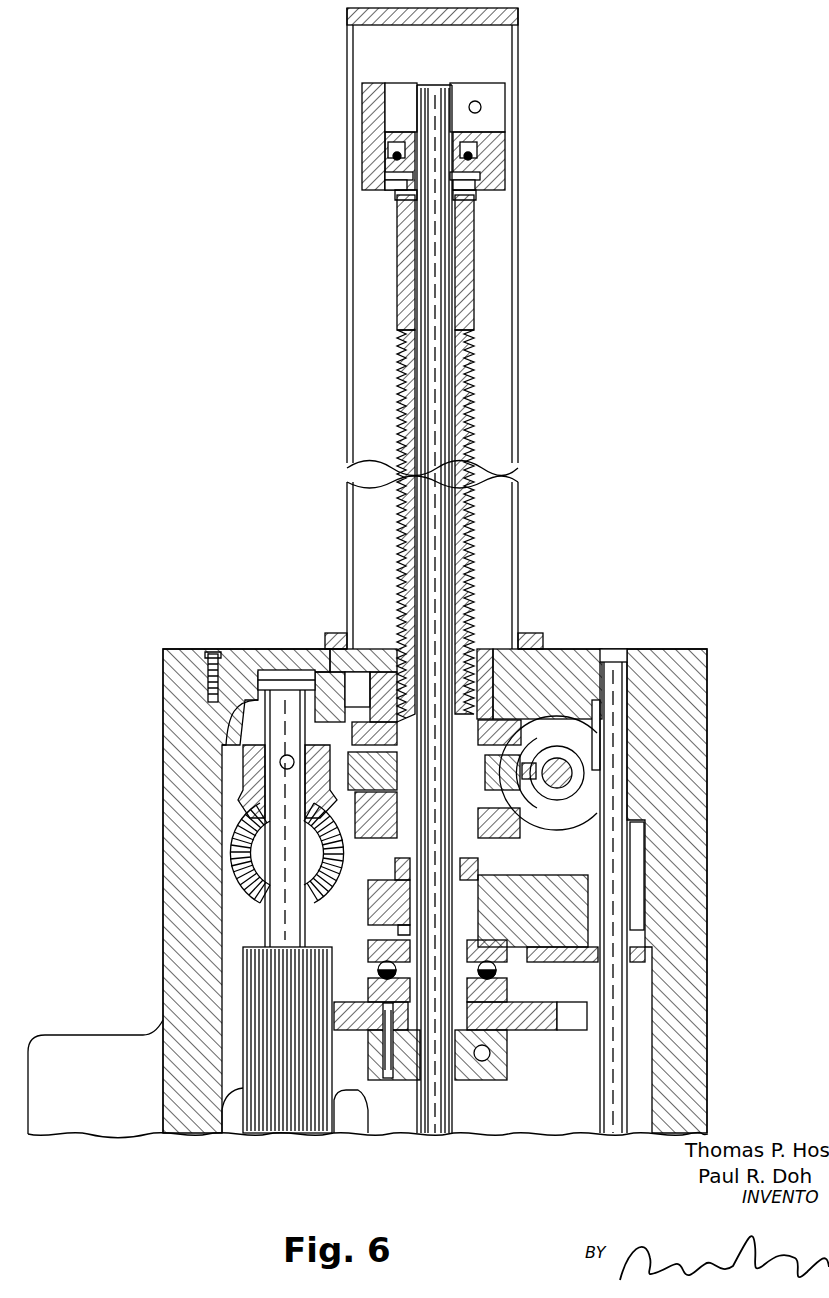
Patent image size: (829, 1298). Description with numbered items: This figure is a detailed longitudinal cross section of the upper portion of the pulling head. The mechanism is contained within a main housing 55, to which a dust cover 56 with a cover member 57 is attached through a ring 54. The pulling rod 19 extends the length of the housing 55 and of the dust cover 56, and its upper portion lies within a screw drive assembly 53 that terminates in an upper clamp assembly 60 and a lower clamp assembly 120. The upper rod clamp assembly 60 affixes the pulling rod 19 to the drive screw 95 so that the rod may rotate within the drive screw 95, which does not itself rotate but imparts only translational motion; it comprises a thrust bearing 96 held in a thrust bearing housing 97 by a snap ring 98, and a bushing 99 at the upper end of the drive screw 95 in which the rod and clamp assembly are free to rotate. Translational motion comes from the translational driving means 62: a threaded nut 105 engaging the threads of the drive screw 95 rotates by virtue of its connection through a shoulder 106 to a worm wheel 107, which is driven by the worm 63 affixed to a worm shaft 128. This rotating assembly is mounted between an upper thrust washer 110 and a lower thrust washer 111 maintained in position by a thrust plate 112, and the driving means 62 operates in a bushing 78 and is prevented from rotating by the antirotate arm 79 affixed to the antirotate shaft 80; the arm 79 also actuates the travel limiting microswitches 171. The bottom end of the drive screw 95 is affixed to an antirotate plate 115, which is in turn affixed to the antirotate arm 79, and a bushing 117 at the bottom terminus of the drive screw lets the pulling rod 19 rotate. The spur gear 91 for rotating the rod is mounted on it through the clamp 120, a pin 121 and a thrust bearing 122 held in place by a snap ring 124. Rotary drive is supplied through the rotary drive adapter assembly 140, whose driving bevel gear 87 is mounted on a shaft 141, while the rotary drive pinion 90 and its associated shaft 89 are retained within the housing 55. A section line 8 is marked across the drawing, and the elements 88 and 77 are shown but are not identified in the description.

The cover member 57 is at (518, 17).
The upper rod clamp assembly 60 is at (512, 110).
The thrust bearing 96 is at (478, 165).
The thrust bearing housing 97 is at (500, 185).
The snap ring 98 is at (475, 182).
The bushing 99 is at (398, 205).
The pulling rod 19 is at (438, 300).
The dust cover 56 is at (518, 340).
The screw drive assembly 53 is at (490, 412).
The drive screw 95 is at (474, 445).
The threaded nut 105 is at (480, 650).
The bushing 78 is at (492, 700).
The upper thrust washer 110 is at (500, 700).
The ring 54 is at (331, 633).
The shaft 141 is at (256, 660).
The shoulder 106 is at (322, 650).
The rotary drive adapter assembly 140 is at (240, 745).
The bevel gear hub 88 is at (250, 770).
The driving bevel gear 87 is at (245, 850).
The section line 8- 8 is at (335, 857).
The shaft 89 is at (285, 925).
The rotary drive pinion 90 is at (255, 985).
The mounting bracket 77 is at (109, 1103).
The worm shaft 128 is at (565, 762).
The worm 63 is at (580, 785).
The worm wheel 107 is at (530, 795).
The travel limiting microswitches 171 is at (638, 895).
The antirotate arm 79 is at (645, 958).
The main housing 55 is at (690, 1092).
The translational driving means 62 is at (530, 830).
The thrust plate 112 is at (508, 814).
The lower thrust washer 111 is at (335, 810).
The bushing 117 is at (410, 882).
The snap ring 124 is at (382, 930).
The antirotate plate 115 is at (509, 928).
The thrust bearing 122 is at (510, 1003).
The pin 121 is at (388, 1078).
The lower clamp assembly 120 is at (487, 1080).
The spur gear 91 is at (528, 1030).
The antirotate shaft 80 is at (613, 1133).